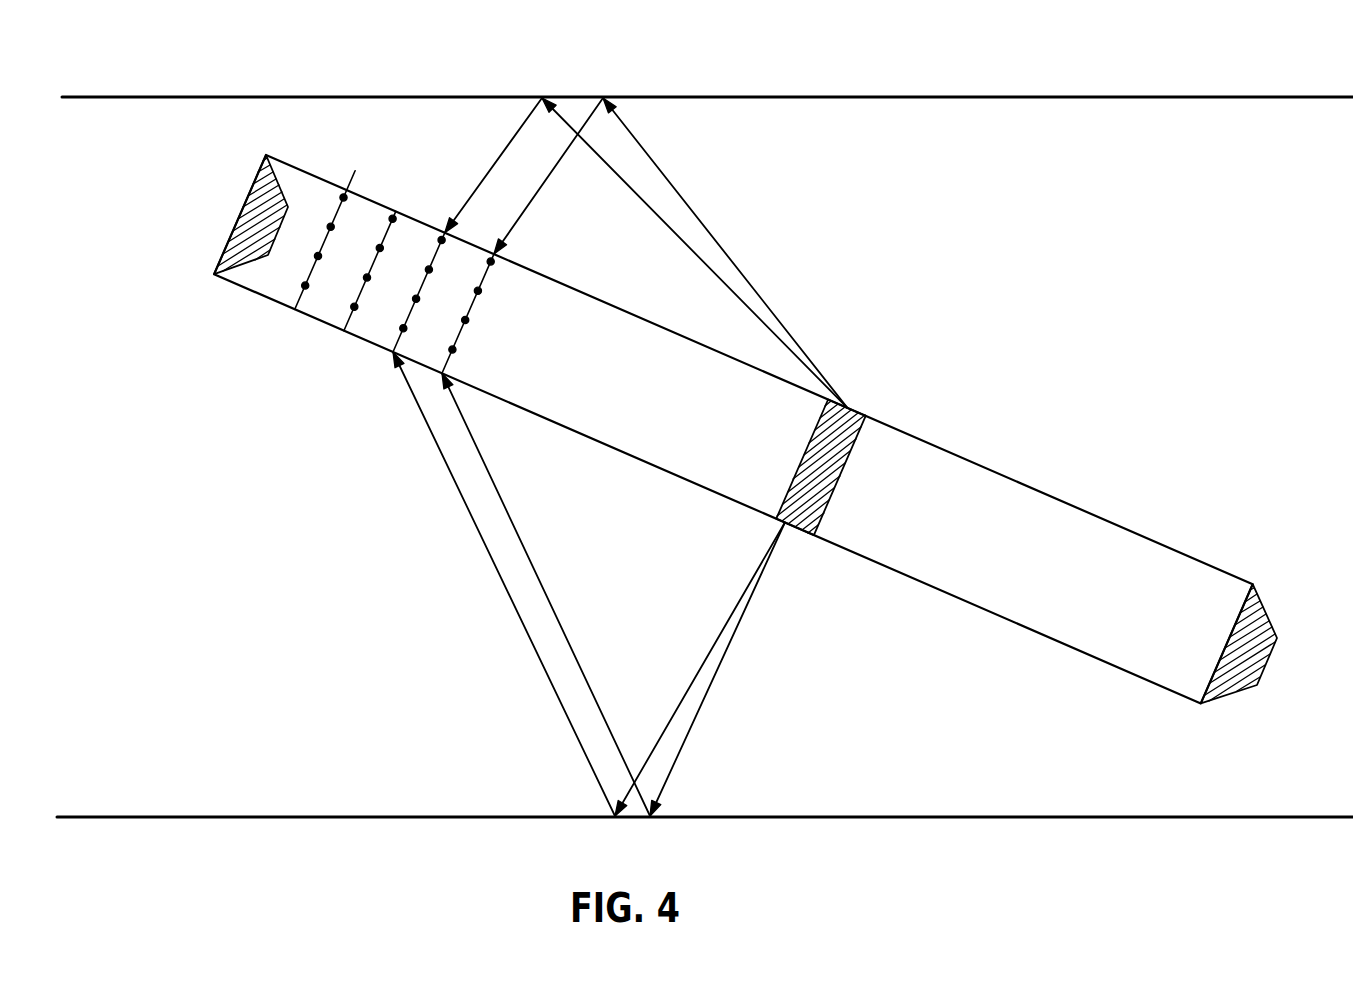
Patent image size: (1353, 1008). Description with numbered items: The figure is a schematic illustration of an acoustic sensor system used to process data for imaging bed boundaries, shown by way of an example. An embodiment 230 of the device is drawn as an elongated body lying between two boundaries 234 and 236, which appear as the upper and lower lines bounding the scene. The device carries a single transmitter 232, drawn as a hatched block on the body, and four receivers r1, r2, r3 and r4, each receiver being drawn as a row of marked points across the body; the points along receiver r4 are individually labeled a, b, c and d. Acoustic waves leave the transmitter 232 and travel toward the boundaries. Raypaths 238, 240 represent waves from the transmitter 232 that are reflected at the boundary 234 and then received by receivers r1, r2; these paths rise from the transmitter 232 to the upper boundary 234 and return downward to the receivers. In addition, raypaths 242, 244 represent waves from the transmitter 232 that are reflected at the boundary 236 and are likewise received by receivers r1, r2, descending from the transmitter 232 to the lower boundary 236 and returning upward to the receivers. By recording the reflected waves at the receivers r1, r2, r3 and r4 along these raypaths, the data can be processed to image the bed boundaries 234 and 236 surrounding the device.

The embodiment 230 is at (745, 429).
The transmitter 232 is at (849, 445).
The boundary 234 is at (707, 71).
The boundary 236 is at (705, 848).
The raypath 238 is at (671, 253).
The raypath 240 is at (646, 253).
The raypath 242 is at (613, 594).
The raypath 244 is at (589, 584).
The receiver r1 is at (410, 346).
The receiver r2 is at (387, 313).
The receiver r3 is at (312, 307).
The receiver r4 is at (291, 263).
The detector element a is at (364, 176).
The detector element b is at (315, 209).
The detector element c is at (338, 246).
The detector element d is at (290, 268).